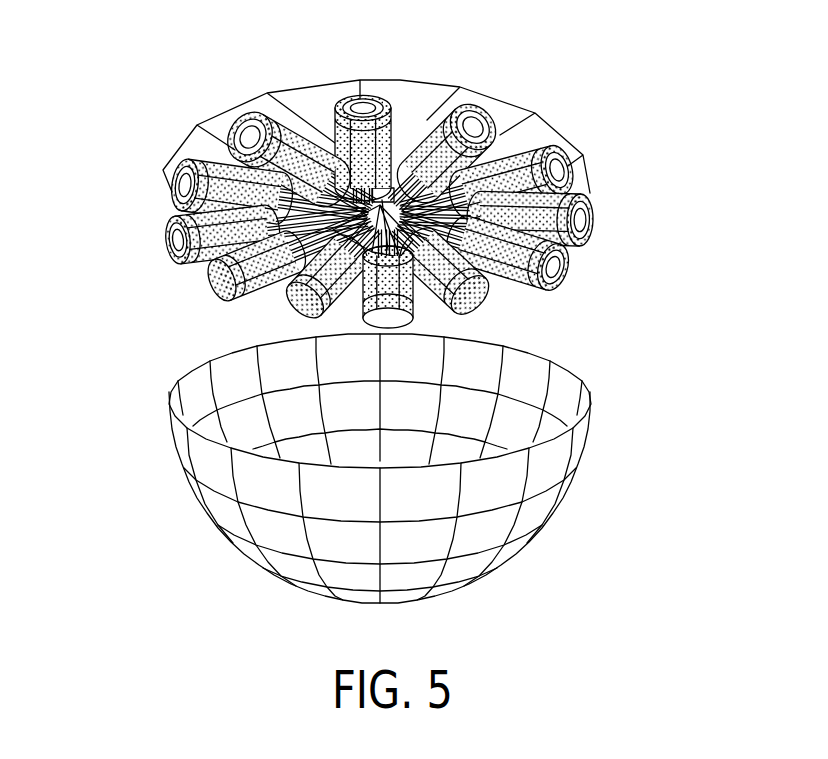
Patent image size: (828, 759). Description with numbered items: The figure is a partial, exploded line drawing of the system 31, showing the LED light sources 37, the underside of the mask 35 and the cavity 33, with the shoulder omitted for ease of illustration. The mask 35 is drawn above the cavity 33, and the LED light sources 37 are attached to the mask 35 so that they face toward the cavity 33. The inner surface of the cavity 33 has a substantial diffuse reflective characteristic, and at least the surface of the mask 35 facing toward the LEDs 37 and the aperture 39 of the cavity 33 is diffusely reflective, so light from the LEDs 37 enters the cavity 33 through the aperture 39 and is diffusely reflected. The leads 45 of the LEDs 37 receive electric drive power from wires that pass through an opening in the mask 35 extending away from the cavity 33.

The system 31 is at (670, 240).
The cavity 33 is at (270, 563).
The mask 35 is at (542, 108).
The LED light sources 37 is at (160, 254).
The aperture 39 is at (574, 362).
The leads 45 is at (272, 286).